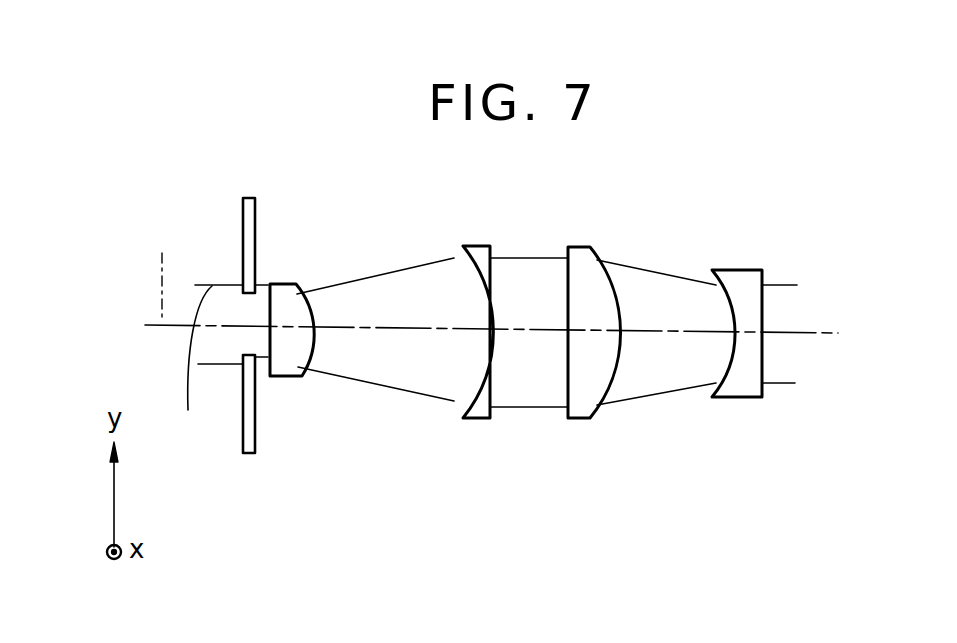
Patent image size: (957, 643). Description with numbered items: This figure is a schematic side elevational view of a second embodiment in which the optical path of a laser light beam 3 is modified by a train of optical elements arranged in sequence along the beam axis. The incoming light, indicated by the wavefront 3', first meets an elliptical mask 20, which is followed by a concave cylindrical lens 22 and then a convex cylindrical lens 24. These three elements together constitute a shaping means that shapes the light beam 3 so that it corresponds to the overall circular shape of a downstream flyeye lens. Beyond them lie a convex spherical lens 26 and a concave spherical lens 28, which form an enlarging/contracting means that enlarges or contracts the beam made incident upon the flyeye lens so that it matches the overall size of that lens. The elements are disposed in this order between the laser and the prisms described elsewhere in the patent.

The light beam 3 is at (201, 366).
The incident light wavefront 3' is at (163, 271).
The elliptical mask 20 is at (256, 203).
The concave cylindrical lens 22 is at (298, 286).
The convex cylindrical lens 24 is at (490, 250).
The convex spherical lens 26 is at (595, 252).
The concave spherical lens 28 is at (765, 272).